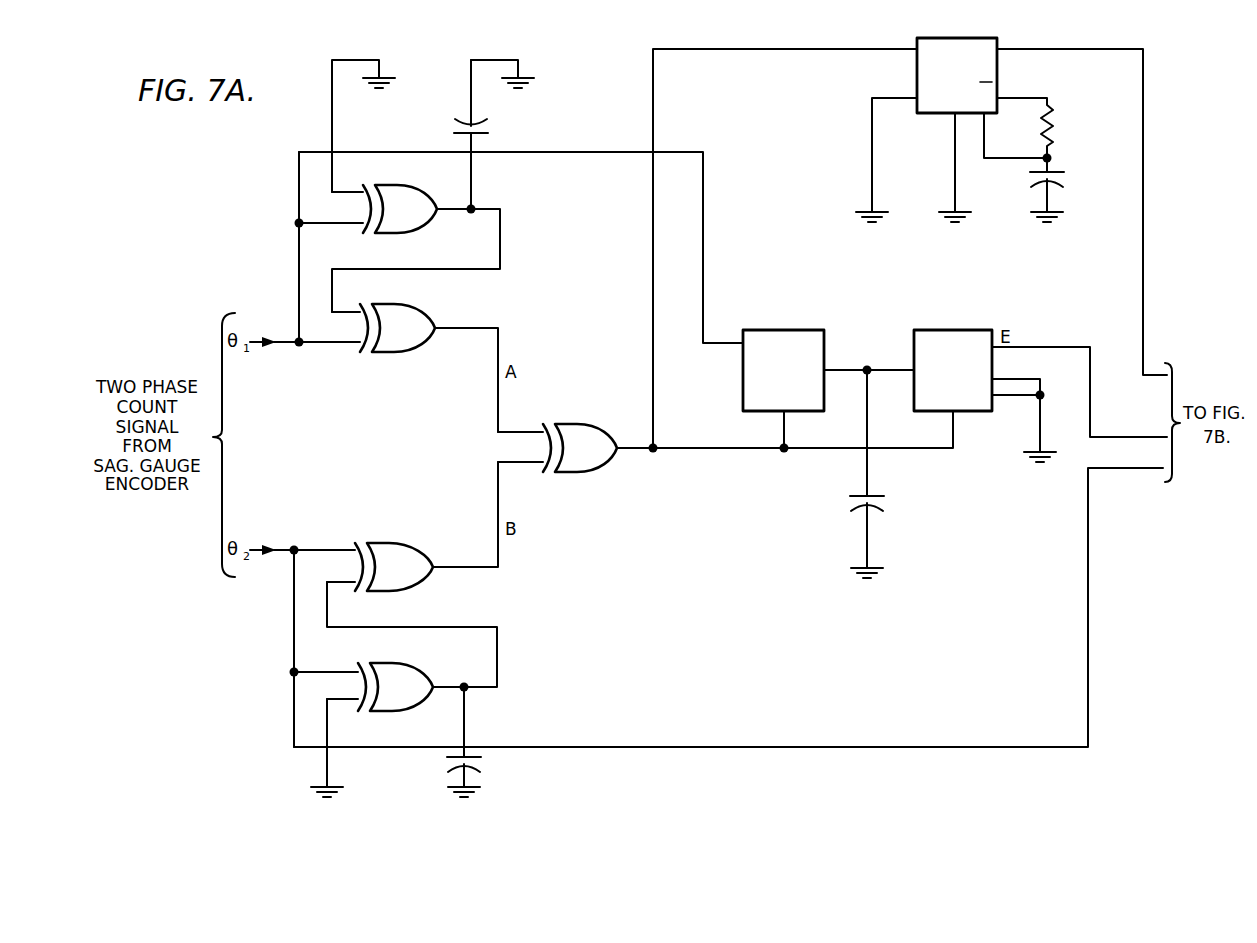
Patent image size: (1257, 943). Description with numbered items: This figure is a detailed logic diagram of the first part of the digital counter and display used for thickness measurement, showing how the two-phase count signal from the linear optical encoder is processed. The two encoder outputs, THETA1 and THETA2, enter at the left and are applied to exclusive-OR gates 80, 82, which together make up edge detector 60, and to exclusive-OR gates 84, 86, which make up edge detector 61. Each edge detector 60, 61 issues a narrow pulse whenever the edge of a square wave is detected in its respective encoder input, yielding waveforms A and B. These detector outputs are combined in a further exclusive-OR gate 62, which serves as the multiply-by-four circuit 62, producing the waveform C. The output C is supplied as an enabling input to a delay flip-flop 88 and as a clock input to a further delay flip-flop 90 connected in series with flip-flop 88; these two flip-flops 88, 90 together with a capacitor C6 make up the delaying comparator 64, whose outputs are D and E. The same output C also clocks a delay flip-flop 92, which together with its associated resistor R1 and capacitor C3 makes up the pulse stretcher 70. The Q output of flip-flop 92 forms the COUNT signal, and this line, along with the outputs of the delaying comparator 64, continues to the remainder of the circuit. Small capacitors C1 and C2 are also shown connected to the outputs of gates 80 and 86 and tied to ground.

The edge detector 60 is at (445, 259).
The edge detector 61 is at (447, 614).
The multiply-by-four circuit 62 is at (575, 474).
The delaying comparator 64 is at (876, 326).
The pulse stretcher 70 is at (922, 167).
The exclusive-OR gate 80 is at (416, 198).
The exclusive-OR gate 82 is at (389, 353).
The exclusive-OR gate 84 is at (409, 562).
The exclusive-OR gate 86 is at (405, 680).
The delay flip-flop 88 is at (791, 330).
The delay flip-flop 90 is at (963, 330).
The delay flip-flop 92 is at (917, 70).
The capacitor C1 is at (480, 124).
The capacitor C2 is at (480, 765).
The capacitor C3 is at (1060, 178).
The capacitor C6 is at (878, 502).
The resistor R1 is at (1053, 125).